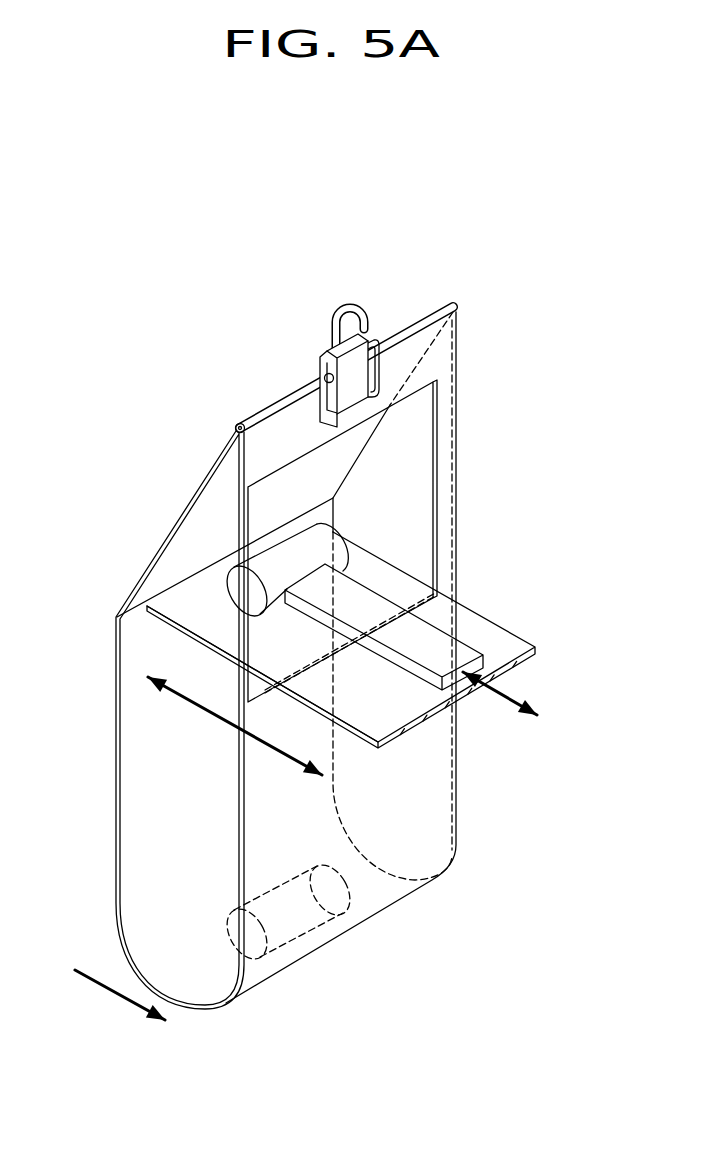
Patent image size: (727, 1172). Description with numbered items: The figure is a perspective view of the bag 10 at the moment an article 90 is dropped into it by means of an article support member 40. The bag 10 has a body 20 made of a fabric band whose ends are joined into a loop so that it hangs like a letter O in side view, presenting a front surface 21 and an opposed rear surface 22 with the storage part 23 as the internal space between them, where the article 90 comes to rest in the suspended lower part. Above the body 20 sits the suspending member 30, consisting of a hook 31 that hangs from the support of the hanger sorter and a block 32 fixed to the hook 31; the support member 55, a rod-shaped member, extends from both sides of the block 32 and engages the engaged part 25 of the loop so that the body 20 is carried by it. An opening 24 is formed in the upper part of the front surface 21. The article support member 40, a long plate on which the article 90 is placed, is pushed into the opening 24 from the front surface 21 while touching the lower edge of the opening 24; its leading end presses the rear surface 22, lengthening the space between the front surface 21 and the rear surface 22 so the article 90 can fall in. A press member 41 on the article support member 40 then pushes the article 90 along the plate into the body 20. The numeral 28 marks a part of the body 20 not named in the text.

The bag 10 is at (250, 302).
The body 20 is at (175, 493).
The front surface 21 is at (447, 438).
The rear surface 22 is at (150, 732).
The storage part 23 is at (206, 972).
The opening 24 is at (436, 484).
The engaged part 25 is at (268, 407).
The inner surface 28 is at (144, 822).
The suspending member 30 is at (376, 299).
The hook 31 is at (343, 308).
The block 32 is at (325, 363).
The article support member 40 is at (477, 630).
The press member 41 is at (431, 652).
The support member 55 is at (326, 372).
The article 90 is at (313, 542).